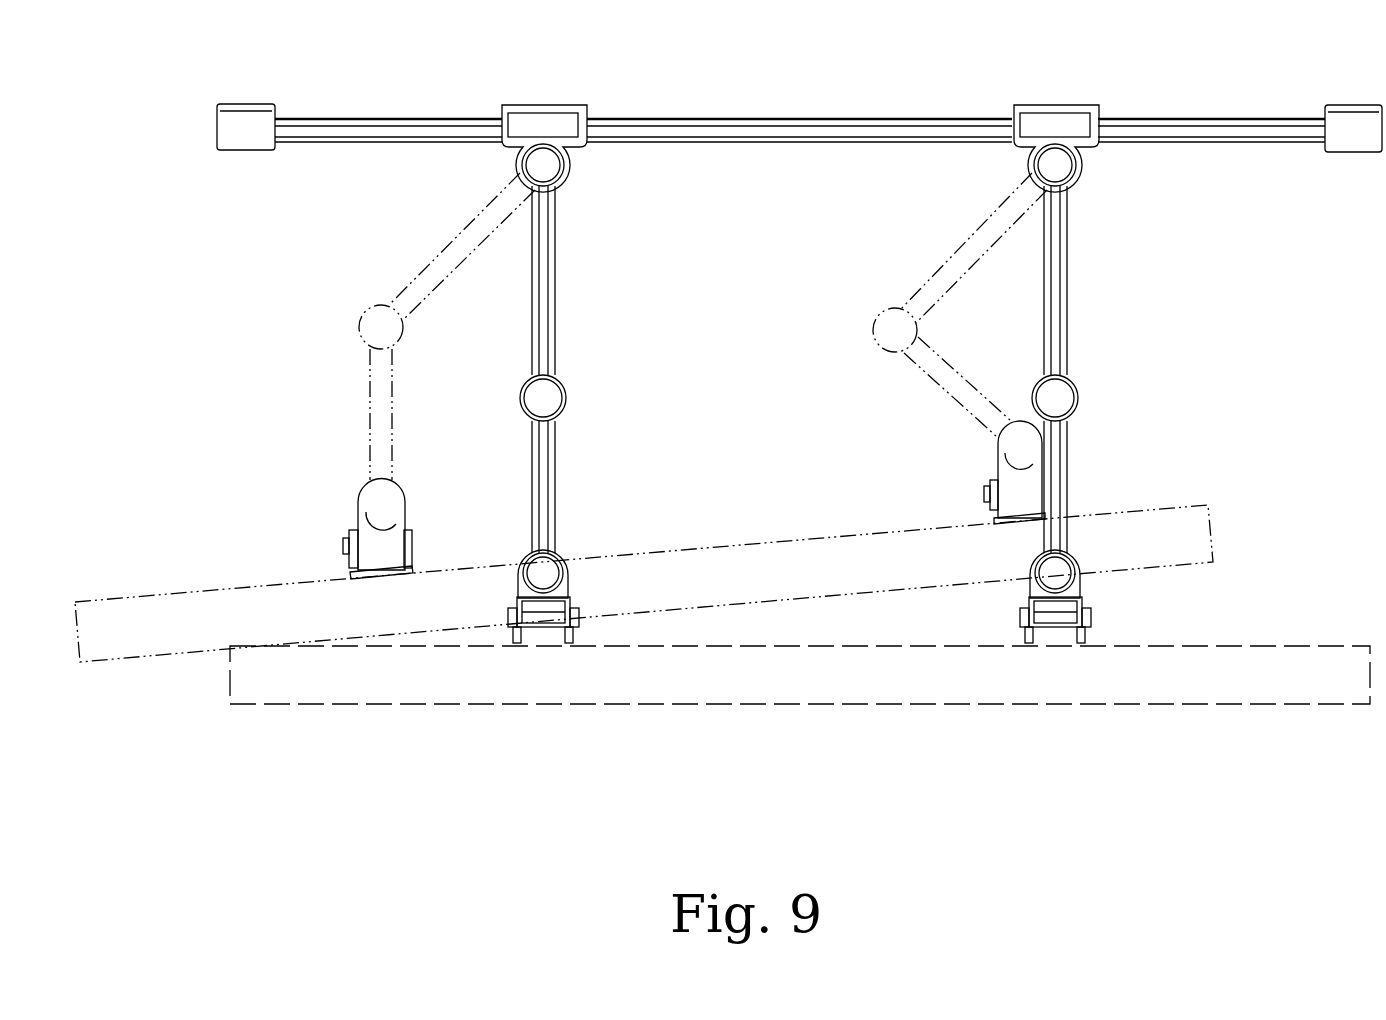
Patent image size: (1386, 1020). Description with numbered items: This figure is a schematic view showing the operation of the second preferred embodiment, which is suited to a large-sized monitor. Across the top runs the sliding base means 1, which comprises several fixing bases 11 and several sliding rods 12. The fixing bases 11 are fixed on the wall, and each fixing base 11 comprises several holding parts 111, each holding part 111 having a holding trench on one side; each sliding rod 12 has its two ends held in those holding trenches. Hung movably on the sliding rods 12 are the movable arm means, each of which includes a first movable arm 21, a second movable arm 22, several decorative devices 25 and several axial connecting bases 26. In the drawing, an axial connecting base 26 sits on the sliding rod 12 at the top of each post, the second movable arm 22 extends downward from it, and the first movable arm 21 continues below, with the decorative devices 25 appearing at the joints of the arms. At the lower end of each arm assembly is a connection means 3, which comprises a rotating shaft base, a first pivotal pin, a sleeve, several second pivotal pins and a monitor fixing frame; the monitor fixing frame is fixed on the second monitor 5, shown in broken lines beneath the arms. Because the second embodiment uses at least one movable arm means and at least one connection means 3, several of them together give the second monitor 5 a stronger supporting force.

The sliding base means 1 is at (795, 118).
The fixing base 11 is at (317, 102).
The holding part 111 is at (318, 140).
The sliding rod 12 is at (892, 137).
The axial connecting base 26 is at (563, 103).
The decorative device 25 is at (550, 164).
The second movable arm 22 is at (556, 292).
The first movable arm 21 is at (556, 478).
The connection means 3 is at (567, 638).
The second monitor 5 is at (1090, 680).